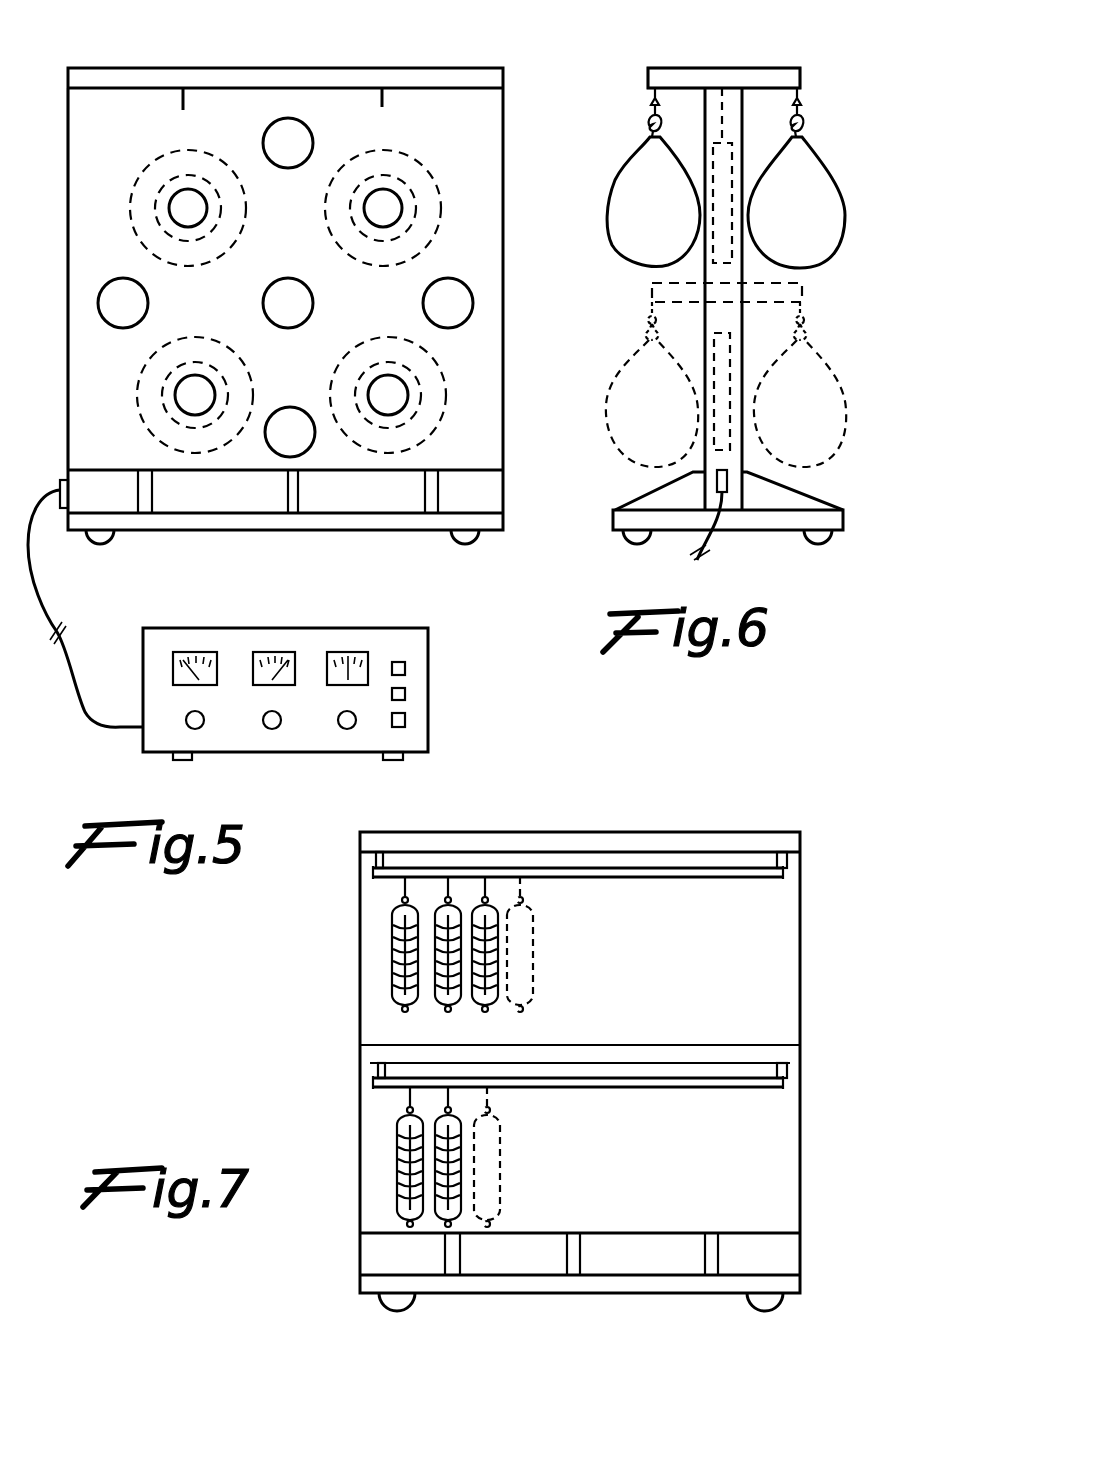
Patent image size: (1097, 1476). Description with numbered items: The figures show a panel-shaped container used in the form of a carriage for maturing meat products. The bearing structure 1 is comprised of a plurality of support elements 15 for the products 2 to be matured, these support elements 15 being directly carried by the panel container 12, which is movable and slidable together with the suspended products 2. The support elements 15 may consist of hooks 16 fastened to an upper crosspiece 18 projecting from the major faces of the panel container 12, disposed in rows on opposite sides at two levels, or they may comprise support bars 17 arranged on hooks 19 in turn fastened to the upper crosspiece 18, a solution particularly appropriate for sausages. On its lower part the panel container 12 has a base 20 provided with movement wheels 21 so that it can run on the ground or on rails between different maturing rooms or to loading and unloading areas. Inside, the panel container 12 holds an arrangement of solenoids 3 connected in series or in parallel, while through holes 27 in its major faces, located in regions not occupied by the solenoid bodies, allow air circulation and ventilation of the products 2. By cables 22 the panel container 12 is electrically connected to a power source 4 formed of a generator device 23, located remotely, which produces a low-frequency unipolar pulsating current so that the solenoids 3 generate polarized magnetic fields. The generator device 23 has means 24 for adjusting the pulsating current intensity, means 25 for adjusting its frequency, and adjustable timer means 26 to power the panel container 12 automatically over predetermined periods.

In FIG. 5, the bearing structure 1 is at (285, 66).
In FIG. 6, the bearing structure 1 is at (766, 62).
In FIG. 6, the products 2 is at (622, 178).
In FIG. 7, the products 2 is at (435, 950).
In FIG. 5, the solenoids 3 is at (200, 165).
In FIG. 6, the solenoids 3 is at (722, 86).
In FIG. 5, the power source 4 is at (435, 640).
In FIG. 5, the panel container 12 is at (62, 262).
In FIG. 6, the panel container 12 is at (746, 154).
In FIG. 6, the support elements 15 is at (636, 96).
In FIG. 5, the hooks 16 is at (175, 97).
In FIG. 6, the hooks 16 is at (648, 110).
In FIG. 7, the support bars 17 is at (652, 880).
In FIG. 5, the upper crosspiece 18 is at (418, 78).
In FIG. 6, the upper crosspiece 18 is at (670, 67).
In FIG. 7, the upper crosspiece 18 is at (612, 841).
In FIG. 7, the hooks 19 is at (388, 862).
In FIG. 5, the base 20 is at (268, 537).
In FIG. 6, the base 20 is at (815, 487).
In FIG. 7, the base 20 is at (614, 1255).
In FIG. 5, the movement wheels 21 is at (108, 538).
In FIG. 6, the movement wheels 21 is at (628, 536).
In FIG. 7, the movement wheels 21 is at (382, 1305).
In FIG. 5, the cables 22 is at (70, 660).
In FIG. 6, the cables 22 is at (688, 567).
In FIG. 5, the generator device 23 is at (282, 640).
In FIG. 5, the means for adjusting the pulsating current intensity 24 is at (185, 720).
In FIG. 5, the means for adjusting the pulsating current frequency 25 is at (275, 727).
In FIG. 5, the adjustable timer means 26 is at (355, 723).
In FIG. 5, the through holes 27 is at (180, 205).